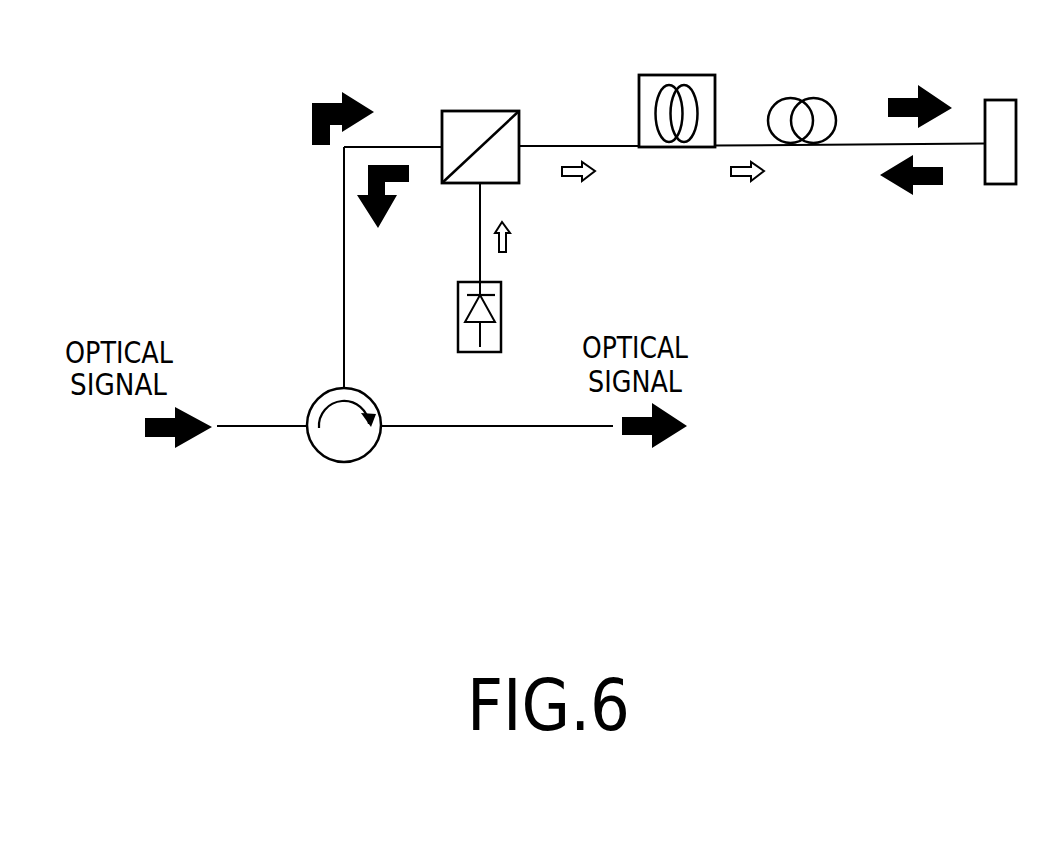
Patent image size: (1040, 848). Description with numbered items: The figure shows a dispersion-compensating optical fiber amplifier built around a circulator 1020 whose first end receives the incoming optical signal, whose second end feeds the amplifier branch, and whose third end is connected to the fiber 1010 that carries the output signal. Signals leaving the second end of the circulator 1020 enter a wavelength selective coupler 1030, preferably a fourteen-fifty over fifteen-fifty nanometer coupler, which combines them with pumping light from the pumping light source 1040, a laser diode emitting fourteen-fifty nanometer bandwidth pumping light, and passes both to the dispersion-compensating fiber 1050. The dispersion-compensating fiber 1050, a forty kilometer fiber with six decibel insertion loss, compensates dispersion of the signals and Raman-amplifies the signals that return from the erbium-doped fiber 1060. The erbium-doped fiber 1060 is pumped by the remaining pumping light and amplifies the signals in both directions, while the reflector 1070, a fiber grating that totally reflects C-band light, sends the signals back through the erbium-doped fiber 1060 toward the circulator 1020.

The fiber 1010 is at (262, 426).
The circulator 1020 is at (344, 463).
The wavelength selective coupler 1030 is at (480, 111).
The pumping light source 1040 is at (502, 316).
The dispersion-compensating fiber 1050 is at (675, 75).
The erbium-doped fiber 1060 is at (801, 98).
The reflector 1070 is at (999, 100).